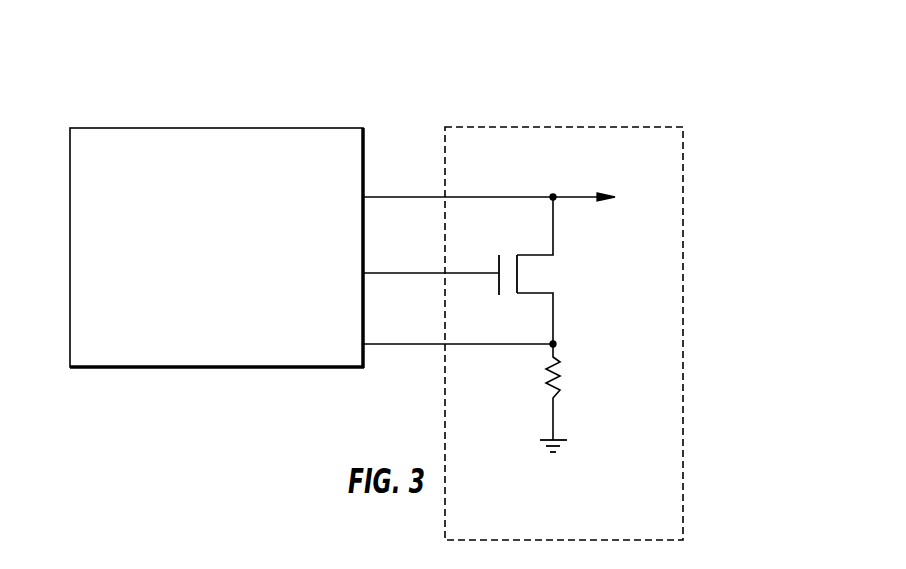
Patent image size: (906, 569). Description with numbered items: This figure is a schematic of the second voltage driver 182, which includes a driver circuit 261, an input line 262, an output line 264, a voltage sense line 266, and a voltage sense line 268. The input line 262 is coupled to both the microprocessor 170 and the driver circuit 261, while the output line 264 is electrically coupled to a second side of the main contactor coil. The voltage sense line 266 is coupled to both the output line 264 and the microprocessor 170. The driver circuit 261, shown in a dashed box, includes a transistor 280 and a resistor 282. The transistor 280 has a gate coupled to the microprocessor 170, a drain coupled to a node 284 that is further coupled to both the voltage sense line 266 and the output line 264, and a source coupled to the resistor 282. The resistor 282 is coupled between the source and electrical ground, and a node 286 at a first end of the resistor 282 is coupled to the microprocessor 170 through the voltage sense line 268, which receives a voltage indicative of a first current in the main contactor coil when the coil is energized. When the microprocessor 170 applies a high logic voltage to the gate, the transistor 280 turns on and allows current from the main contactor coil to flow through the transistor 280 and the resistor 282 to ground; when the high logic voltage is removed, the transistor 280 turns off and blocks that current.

The microprocessor 170 is at (248, 128).
The second voltage driver 182 is at (792, 102).
The driver circuit 261 is at (653, 127).
The input line 262 is at (374, 272).
The output line 264 is at (583, 198).
The voltage sense line 266 is at (402, 196).
The voltage sense line 268 is at (374, 343).
The transistor 280 is at (542, 257).
The resistor 282 is at (562, 373).
The node 284 is at (554, 195).
The node 286 is at (550, 349).